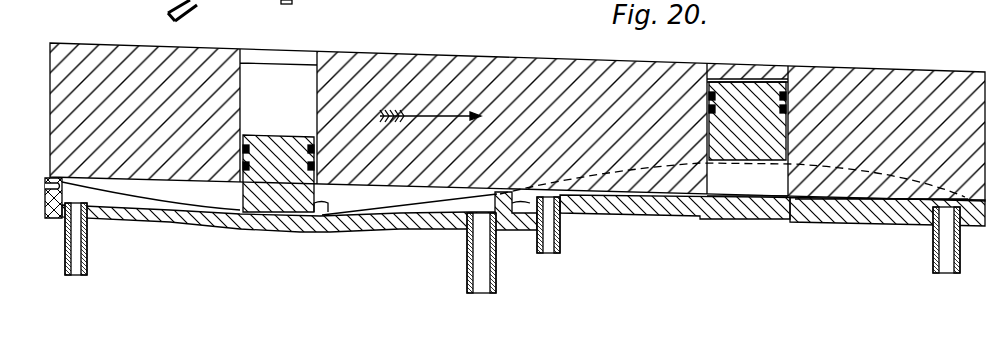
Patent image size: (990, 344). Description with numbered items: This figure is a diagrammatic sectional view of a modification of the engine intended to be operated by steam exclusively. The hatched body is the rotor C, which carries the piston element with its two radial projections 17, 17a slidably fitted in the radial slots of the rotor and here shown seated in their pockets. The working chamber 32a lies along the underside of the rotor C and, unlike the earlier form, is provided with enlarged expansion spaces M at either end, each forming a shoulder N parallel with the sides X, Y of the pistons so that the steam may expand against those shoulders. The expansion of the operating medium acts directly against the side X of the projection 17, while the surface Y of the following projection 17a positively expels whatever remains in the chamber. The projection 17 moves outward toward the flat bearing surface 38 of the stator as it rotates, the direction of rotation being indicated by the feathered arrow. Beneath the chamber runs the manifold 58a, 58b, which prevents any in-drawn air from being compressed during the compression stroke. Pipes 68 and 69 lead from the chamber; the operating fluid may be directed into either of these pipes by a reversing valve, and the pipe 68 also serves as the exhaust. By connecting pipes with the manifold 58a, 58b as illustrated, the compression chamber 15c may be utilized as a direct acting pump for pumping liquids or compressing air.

The rotor C is at (521, 76).
The compression chamber 15c is at (302, 77).
The radial projection 17 is at (758, 82).
The radial projection 17a is at (273, 150).
The flat bearing surface 38 is at (772, 196).
The shoulder N is at (46, 185).
The enlarged expansion space M is at (54, 218).
The side of piston member X is at (222, 202).
The surface of piston member Y is at (326, 212).
The working chamber 32a is at (212, 200).
The pipe 69 is at (89, 260).
The pipe 68 is at (467, 283).
The manifold 58a is at (648, 199).
The manifold 58b is at (854, 206).